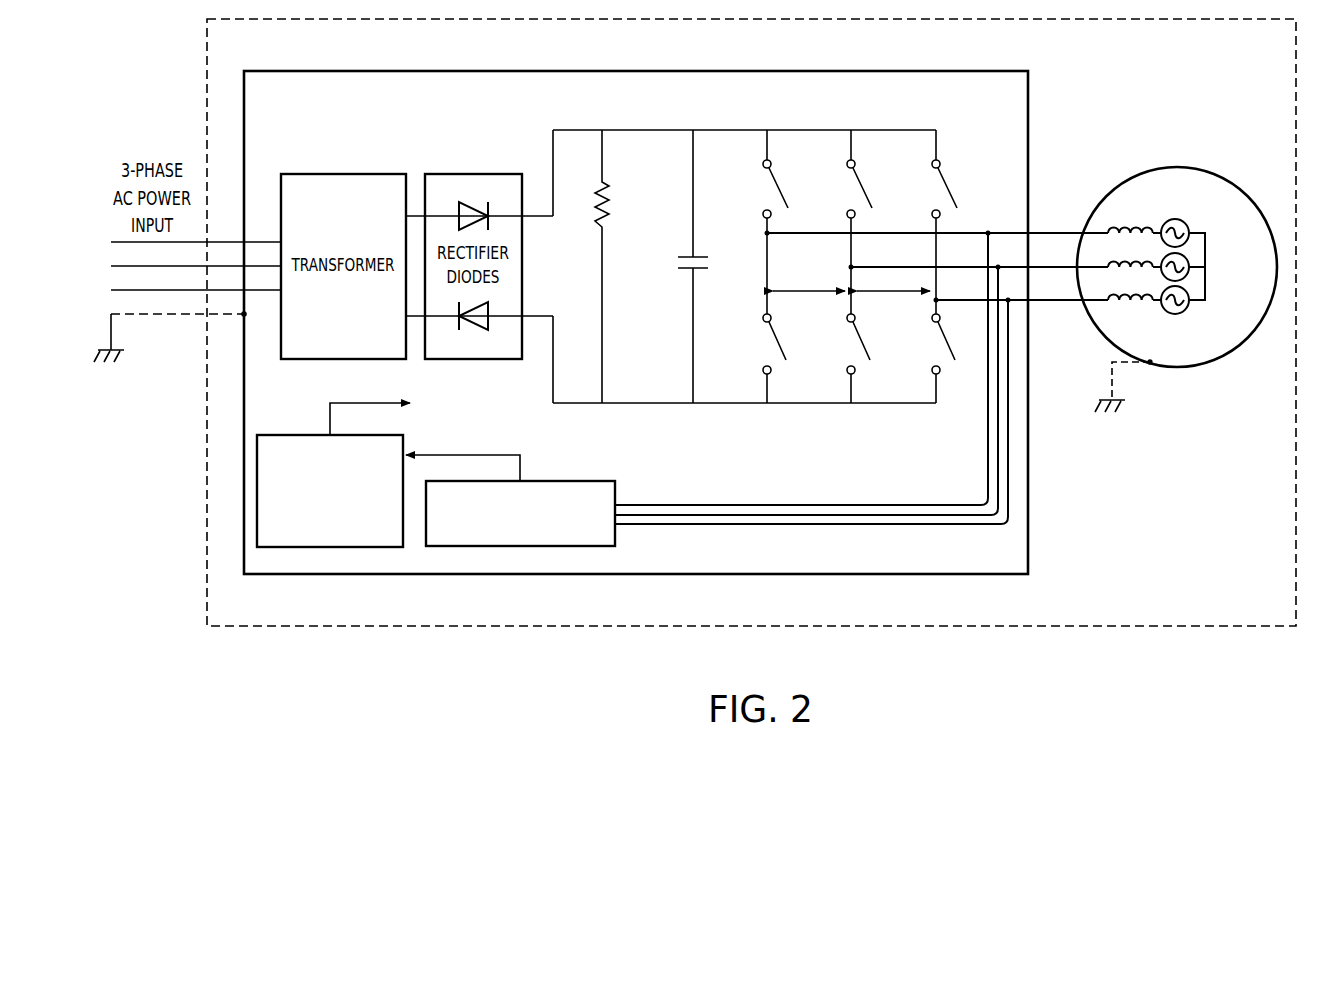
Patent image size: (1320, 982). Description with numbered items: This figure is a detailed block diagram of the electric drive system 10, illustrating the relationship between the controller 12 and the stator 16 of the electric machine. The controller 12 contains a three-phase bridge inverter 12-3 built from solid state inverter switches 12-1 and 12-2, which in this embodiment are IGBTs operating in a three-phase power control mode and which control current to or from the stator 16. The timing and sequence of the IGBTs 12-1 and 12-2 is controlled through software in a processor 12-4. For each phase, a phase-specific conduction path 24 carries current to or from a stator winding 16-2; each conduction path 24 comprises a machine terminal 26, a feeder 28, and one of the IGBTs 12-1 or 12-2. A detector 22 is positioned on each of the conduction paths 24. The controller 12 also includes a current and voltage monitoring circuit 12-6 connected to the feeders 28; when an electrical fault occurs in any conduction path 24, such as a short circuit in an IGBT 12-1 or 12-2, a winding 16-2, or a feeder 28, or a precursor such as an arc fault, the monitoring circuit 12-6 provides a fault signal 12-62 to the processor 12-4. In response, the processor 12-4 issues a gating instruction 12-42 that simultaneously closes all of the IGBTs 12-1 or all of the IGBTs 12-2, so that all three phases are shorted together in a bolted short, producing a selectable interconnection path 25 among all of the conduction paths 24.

The electric drive system 10 is at (990, 630).
The controller 12 is at (372, 574).
The inverter switches 12-1 is at (772, 182).
The inverter switches 12-2 is at (775, 340).
The three-phase bridge inverter 12-3 is at (752, 130).
The processor 12-4 is at (353, 524).
The gating instruction 12-42 is at (329, 424).
The current and voltage monitoring circuit 12-6 is at (583, 480).
The fault signal 12-62 is at (475, 454).
The stator 16 is at (1190, 367).
The stator winding 16-2 is at (1125, 227).
The detector 22 is at (988, 231).
The phase-specific conduction path 24 is at (822, 231).
The interconnection path 25 is at (821, 297).
The machine terminal 26 is at (1070, 232).
The feeder 28 is at (1040, 232).